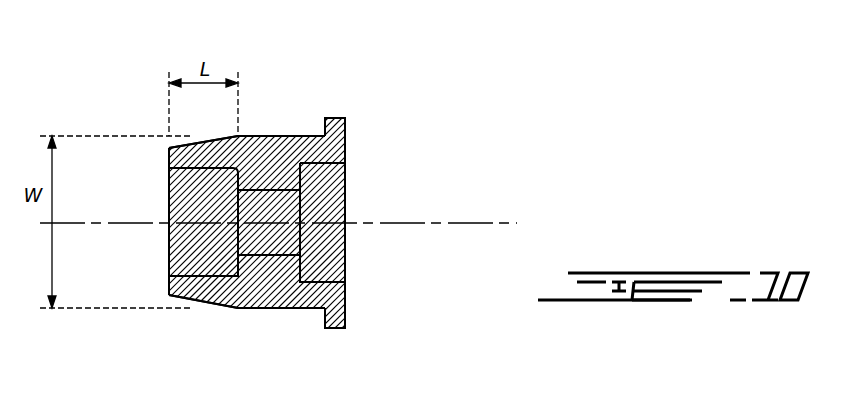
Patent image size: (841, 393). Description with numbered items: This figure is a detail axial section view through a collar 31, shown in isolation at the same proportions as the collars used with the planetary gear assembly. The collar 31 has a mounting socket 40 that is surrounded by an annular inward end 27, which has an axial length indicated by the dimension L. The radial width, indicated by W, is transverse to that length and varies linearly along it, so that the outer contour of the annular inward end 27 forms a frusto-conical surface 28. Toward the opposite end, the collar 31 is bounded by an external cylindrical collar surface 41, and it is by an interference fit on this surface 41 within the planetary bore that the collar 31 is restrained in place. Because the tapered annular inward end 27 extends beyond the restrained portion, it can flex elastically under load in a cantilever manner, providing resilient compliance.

The collar 31 is at (383, 139).
The annular inward end 27 is at (200, 308).
The frusto-conical surface 28 is at (158, 249).
The mounting socket 40 is at (203, 197).
The external cylindrical collar surface 41 is at (277, 308).